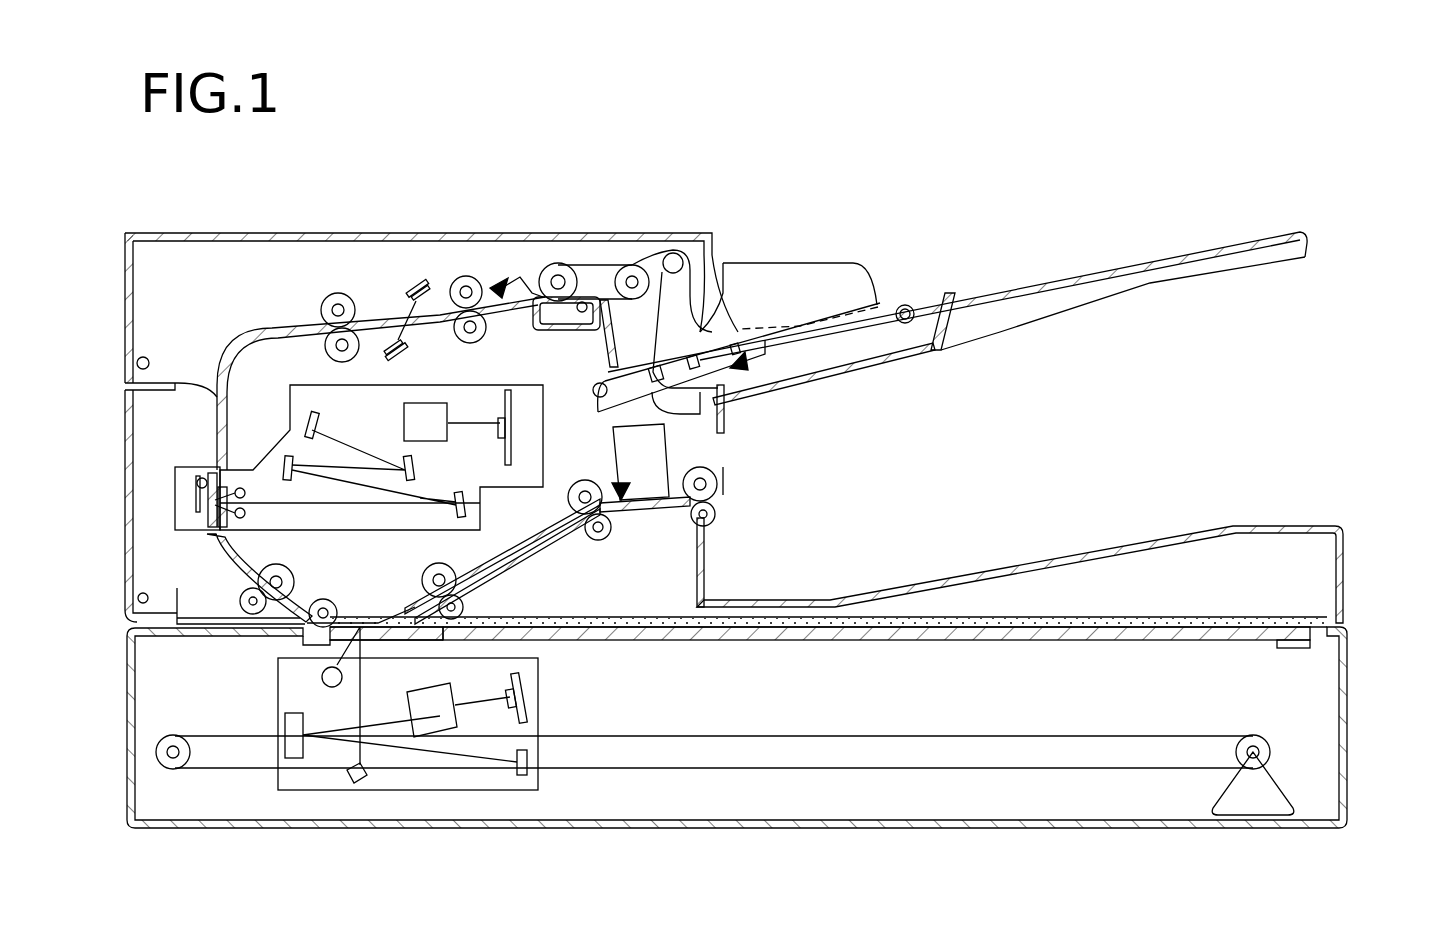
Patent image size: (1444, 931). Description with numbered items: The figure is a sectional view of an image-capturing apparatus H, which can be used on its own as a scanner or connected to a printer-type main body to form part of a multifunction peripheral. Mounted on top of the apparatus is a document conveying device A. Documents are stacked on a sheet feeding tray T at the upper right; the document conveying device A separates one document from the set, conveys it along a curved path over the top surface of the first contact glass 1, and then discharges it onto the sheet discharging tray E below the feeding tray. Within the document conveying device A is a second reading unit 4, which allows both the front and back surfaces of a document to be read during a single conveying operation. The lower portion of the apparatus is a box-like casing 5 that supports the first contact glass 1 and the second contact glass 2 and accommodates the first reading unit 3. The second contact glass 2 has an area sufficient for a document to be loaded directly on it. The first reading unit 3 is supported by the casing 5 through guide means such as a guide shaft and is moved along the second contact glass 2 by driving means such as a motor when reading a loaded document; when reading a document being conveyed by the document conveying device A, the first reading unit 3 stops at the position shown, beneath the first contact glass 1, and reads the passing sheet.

The first contact glass 1 is at (377, 640).
The second contact glass 2 is at (701, 642).
The first reading unit 3 is at (540, 690).
The second reading unit 4 is at (497, 385).
The casing 5 is at (1348, 727).
The sheet feeding tray T is at (1143, 238).
The sheet discharging tray E is at (1114, 528).
The document conveying device A is at (734, 400).
The image-capturing apparatus H is at (782, 717).